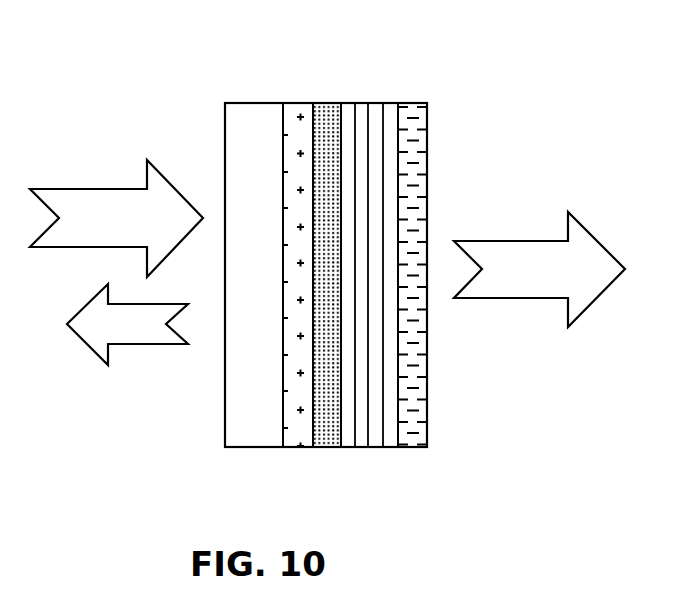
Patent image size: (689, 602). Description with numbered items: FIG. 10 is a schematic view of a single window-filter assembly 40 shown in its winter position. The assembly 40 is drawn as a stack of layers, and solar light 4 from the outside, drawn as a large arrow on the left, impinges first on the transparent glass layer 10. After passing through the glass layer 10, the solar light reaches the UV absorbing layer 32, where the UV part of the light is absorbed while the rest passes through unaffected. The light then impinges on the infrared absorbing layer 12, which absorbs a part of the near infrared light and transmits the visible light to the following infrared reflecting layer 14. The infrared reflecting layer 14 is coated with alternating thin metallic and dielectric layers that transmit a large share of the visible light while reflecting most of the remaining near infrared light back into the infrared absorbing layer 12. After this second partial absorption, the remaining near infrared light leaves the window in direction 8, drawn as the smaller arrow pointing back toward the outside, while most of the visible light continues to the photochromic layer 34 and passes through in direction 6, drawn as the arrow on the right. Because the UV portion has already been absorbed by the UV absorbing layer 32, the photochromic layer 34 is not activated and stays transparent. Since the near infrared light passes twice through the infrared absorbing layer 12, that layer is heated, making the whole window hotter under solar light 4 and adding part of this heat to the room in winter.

The solar light 4 is at (70, 189).
The direction 6 is at (508, 241).
The direction 8 is at (155, 345).
The transparent glass layer 10 is at (257, 103).
The infrared absorbing layer 12 is at (329, 103).
The infrared reflecting layer 14 is at (372, 448).
The UV absorbing layer 32 is at (293, 448).
The photochromic layer 34 is at (412, 104).
The window-filter assembly 40 is at (462, 113).